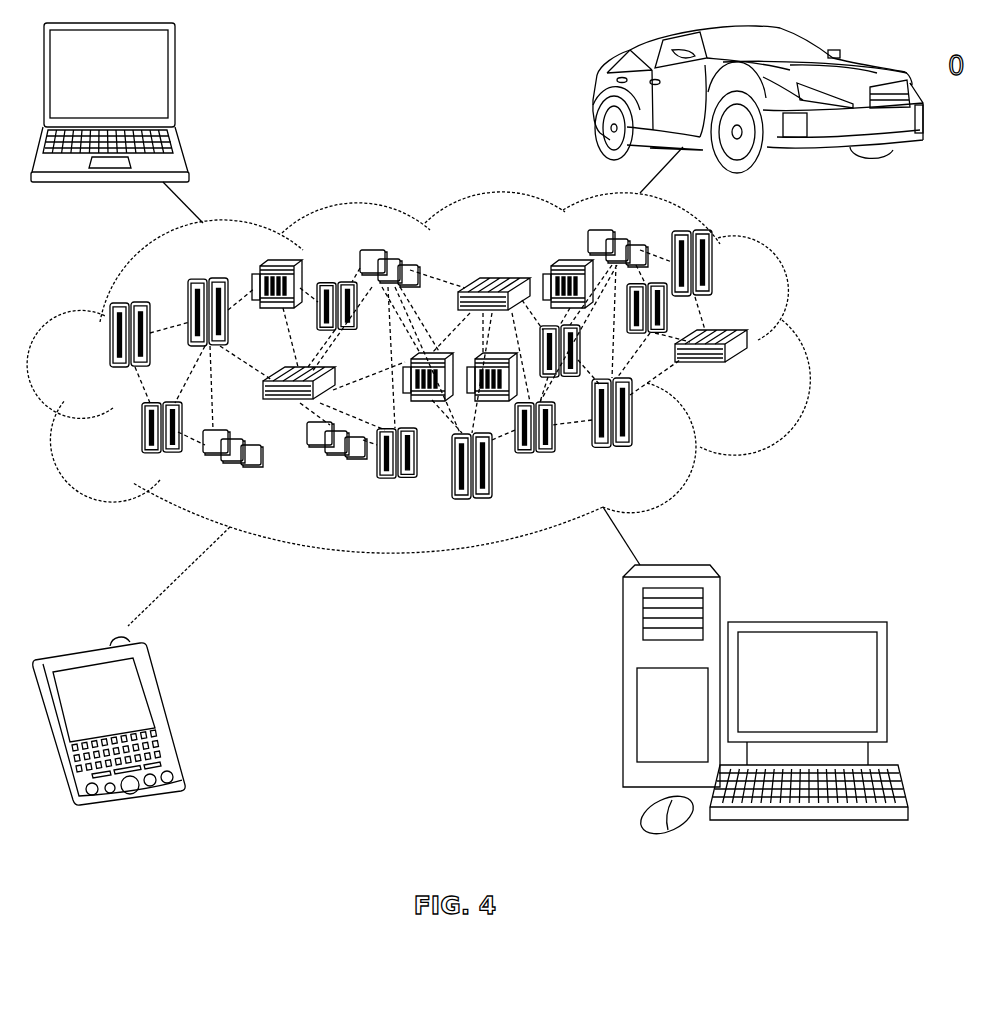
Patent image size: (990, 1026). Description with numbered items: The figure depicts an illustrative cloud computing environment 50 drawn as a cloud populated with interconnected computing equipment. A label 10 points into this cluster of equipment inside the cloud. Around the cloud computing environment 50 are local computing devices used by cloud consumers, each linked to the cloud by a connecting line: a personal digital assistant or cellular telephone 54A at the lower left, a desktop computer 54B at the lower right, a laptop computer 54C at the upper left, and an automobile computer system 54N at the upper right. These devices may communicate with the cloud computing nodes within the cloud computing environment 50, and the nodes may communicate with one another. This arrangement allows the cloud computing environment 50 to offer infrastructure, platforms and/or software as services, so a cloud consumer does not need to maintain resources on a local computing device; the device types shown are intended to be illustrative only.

The cloud computing node 10 is at (750, 373).
The cloud computing environment 50 is at (445, 372).
The personal digital assistant (PDA) or cellular telephone 54A is at (167, 711).
The desktop computer 54B is at (803, 620).
The laptop computer 54C is at (176, 83).
The automobile computer system 54N is at (596, 100).